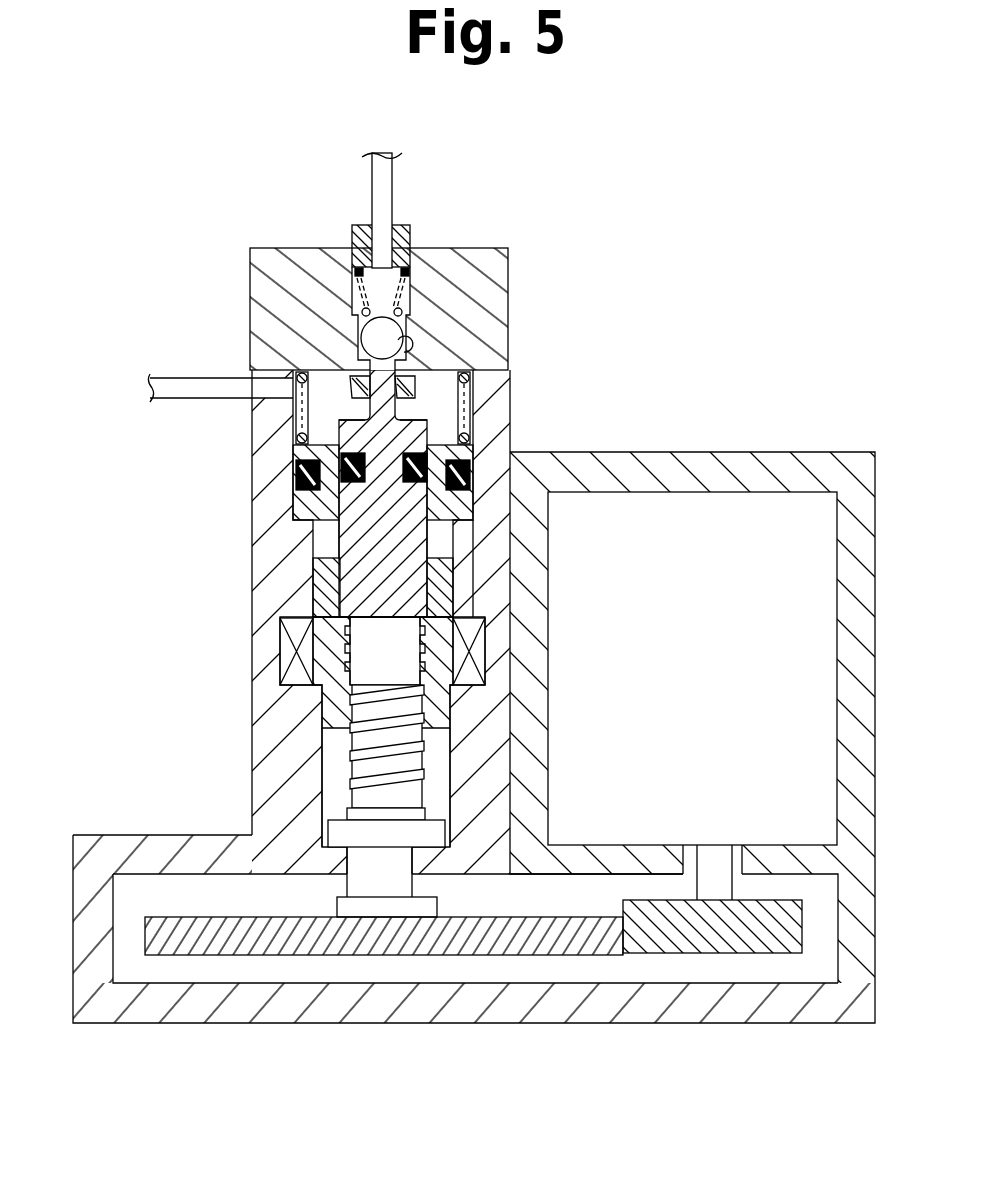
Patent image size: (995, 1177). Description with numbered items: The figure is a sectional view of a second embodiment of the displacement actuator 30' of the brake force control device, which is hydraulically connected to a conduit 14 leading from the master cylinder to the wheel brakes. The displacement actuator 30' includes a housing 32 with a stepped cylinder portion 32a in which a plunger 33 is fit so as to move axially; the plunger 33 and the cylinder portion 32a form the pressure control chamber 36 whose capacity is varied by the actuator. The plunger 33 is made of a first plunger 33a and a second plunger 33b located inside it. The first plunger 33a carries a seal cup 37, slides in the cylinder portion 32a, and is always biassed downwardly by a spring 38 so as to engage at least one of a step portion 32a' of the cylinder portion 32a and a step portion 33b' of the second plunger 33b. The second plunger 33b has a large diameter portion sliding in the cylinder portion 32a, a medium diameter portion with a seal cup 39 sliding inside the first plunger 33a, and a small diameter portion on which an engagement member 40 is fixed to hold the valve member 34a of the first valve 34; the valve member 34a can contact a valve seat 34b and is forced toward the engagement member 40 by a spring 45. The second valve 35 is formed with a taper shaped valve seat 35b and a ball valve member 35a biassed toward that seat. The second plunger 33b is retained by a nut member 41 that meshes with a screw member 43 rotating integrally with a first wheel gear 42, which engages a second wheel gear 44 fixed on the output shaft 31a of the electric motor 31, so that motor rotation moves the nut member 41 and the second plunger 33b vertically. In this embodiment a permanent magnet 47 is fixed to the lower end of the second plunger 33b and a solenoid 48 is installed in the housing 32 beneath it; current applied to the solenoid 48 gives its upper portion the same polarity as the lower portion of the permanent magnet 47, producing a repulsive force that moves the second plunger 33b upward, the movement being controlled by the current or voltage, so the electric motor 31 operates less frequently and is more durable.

The displacement actuator 30' is at (348, 257).
The conduit 14 is at (395, 176).
The engagement member 40 is at (412, 273).
The second valve 35 is at (612, 225).
The ball valve member 35a is at (388, 336).
The valve seat 35b is at (405, 347).
The first valve 34 is at (140, 262).
The valve member 34a is at (340, 378).
The valve seat 34b is at (357, 372).
The pressure control chamber 36 is at (433, 393).
The seal cup 39 is at (458, 433).
The spring 38 is at (297, 446).
The seal cup 37 is at (303, 478).
The spring 45 is at (345, 412).
The plunger 33 is at (70, 518).
The first plunger 33a is at (312, 510).
The second plunger 33b is at (253, 565).
The step portion 33b' is at (316, 578).
The permanent magnet 47 is at (320, 615).
The nut member 41 is at (327, 640).
The solenoid 48 is at (282, 663).
The screw member 43 is at (352, 712).
The cylinder portion 32a is at (286, 787).
The step portion 32a' is at (594, 512).
The housing 32 is at (287, 806).
The electric motor 31 is at (800, 517).
The output shaft 31a is at (718, 890).
The first wheel gear 42 is at (444, 943).
The second wheel gear 44 is at (675, 945).